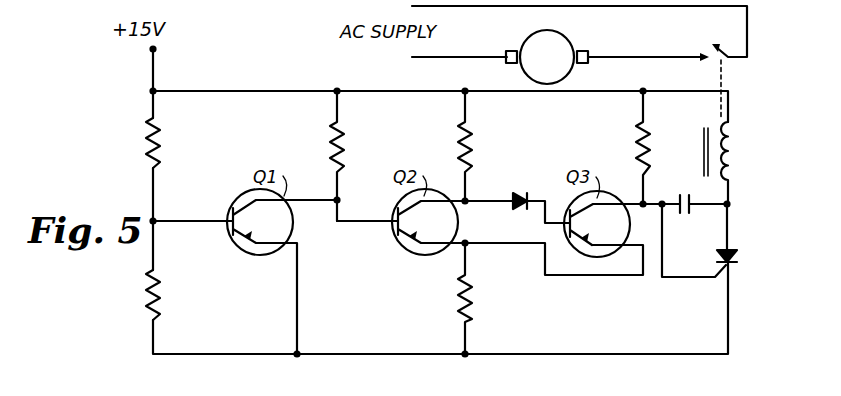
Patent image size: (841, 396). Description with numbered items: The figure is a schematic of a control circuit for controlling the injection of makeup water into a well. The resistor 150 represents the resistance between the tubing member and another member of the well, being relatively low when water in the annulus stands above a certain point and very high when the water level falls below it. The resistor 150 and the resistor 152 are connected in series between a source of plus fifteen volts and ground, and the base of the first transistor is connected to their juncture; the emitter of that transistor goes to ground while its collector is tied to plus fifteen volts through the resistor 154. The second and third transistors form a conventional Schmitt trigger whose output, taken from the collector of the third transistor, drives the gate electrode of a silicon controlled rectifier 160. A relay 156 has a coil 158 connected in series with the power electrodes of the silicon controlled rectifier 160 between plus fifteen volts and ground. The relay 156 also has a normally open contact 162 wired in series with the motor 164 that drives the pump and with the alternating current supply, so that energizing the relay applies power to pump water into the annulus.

The resistor 150 is at (160, 140).
The resistor 152 is at (160, 292).
The resistor 154 is at (344, 138).
The relay 156 is at (702, 151).
The coil 158 is at (729, 134).
The silicon controlled rectifier 160 is at (729, 266).
The normally open contact 162 is at (717, 44).
The motor 164 is at (572, 38).